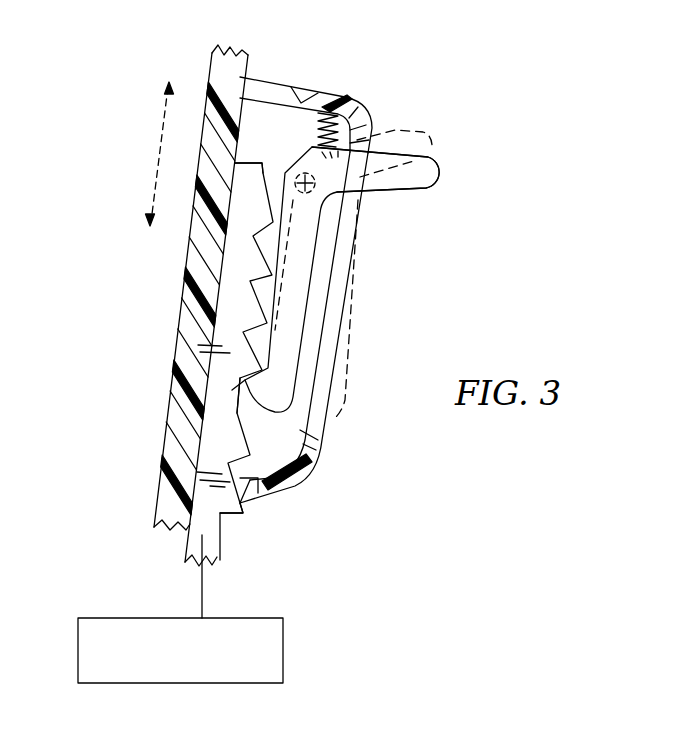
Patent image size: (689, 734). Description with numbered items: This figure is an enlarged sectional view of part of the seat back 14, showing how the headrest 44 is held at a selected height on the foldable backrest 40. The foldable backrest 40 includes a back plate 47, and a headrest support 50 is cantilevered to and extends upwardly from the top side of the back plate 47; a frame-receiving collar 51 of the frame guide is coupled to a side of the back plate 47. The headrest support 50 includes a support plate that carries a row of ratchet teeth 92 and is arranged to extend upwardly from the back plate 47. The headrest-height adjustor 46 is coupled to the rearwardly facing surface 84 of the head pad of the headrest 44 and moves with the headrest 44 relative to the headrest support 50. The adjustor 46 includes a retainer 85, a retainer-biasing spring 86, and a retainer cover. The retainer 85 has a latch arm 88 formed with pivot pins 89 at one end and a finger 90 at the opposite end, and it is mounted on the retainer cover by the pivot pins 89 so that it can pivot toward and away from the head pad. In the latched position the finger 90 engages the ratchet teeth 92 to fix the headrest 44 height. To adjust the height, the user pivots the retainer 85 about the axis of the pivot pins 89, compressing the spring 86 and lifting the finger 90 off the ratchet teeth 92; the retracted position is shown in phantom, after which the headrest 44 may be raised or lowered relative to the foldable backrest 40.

The seat back 14 is at (92, 508).
The foldable backrest 40 is at (237, 557).
The headrest 44 is at (200, 83).
The headrest-height adjustor 46 is at (449, 130).
The back plate 47 is at (118, 617).
The headrest support 50 is at (258, 142).
The second upper frame-receiving collar 51 is at (190, 537).
The rearwardly facing surface 84 is at (202, 413).
The retainer 85 is at (280, 420).
The retainer-biasing spring 86 is at (305, 134).
The latch arm 88 is at (318, 293).
The pivot pins 89 is at (365, 213).
The finger 90 is at (230, 392).
The ratchet teeth 92 is at (233, 505).